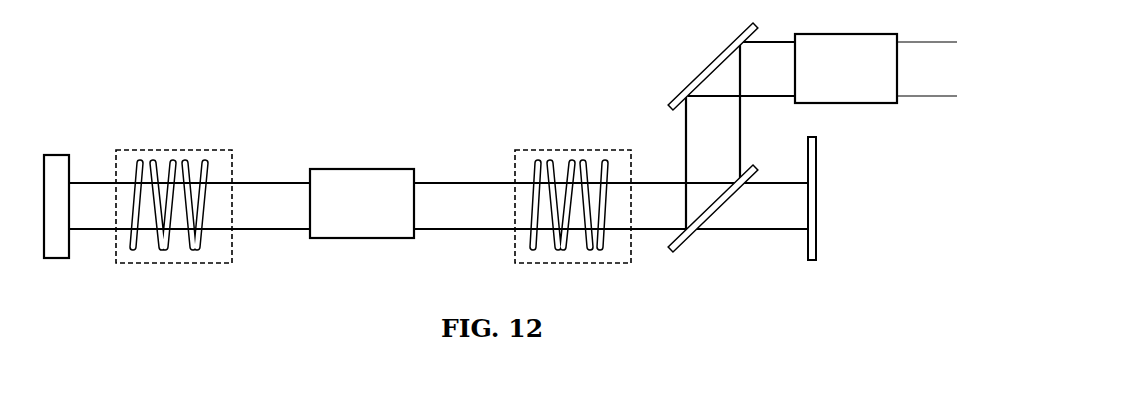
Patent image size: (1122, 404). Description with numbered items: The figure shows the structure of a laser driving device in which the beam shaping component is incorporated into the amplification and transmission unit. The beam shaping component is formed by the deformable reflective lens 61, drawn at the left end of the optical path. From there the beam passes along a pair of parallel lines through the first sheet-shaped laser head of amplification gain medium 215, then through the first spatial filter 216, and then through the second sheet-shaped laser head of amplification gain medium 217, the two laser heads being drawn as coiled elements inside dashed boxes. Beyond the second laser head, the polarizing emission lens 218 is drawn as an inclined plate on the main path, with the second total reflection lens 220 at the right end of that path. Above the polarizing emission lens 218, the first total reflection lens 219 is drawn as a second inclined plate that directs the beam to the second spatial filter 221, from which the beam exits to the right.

The deformable reflective lens 61 is at (56, 185).
The first sheet-shaped laser head of amplification gain medium 215 is at (174, 185).
The first spatial filter 216 is at (362, 203).
The second sheet-shaped laser head of amplification gain medium 217 is at (573, 187).
The polarizing emission lens 218 is at (713, 223).
The first total reflection lens 219 is at (708, 66).
The second total reflection lens 220 is at (830, 198).
The second spatial filter 221 is at (846, 68).